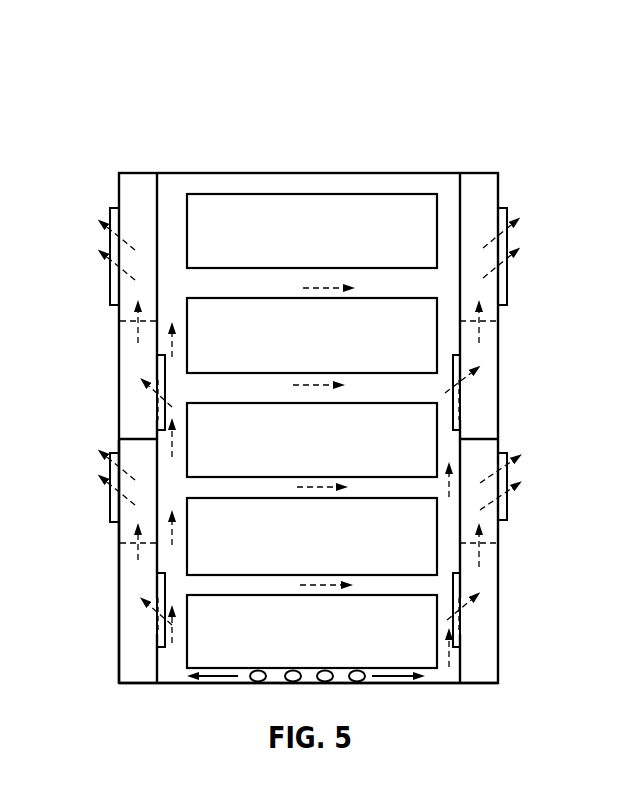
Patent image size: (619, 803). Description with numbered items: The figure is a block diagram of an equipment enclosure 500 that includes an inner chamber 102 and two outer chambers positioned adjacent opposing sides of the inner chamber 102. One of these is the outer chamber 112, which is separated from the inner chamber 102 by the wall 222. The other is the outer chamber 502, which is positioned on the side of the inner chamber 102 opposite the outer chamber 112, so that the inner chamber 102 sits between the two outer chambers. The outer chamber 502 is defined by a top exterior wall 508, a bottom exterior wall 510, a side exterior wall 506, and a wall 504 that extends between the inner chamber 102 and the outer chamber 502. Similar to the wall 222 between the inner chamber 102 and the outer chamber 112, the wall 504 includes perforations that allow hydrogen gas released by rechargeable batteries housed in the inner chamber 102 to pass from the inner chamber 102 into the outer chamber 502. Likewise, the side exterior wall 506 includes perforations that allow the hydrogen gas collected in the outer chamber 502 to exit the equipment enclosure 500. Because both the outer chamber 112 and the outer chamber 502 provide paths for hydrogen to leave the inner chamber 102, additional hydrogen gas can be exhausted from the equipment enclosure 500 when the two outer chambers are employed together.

The equipment enclosure 500 is at (112, 58).
The inner chamber 102 is at (335, 183).
The outer chamber 112 is at (480, 182).
The wall 222 is at (462, 212).
The outer chamber 502 is at (132, 193).
The wall 504 is at (157, 562).
The side exterior wall 506 is at (118, 618).
The top exterior wall 508 is at (145, 173).
The bottom exterior wall 510 is at (138, 683).